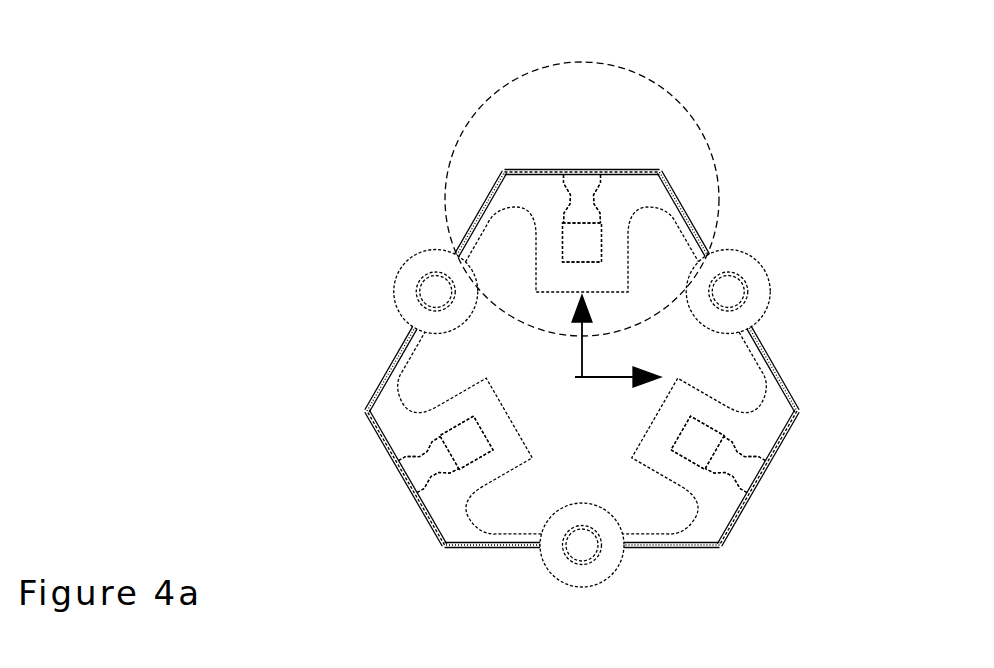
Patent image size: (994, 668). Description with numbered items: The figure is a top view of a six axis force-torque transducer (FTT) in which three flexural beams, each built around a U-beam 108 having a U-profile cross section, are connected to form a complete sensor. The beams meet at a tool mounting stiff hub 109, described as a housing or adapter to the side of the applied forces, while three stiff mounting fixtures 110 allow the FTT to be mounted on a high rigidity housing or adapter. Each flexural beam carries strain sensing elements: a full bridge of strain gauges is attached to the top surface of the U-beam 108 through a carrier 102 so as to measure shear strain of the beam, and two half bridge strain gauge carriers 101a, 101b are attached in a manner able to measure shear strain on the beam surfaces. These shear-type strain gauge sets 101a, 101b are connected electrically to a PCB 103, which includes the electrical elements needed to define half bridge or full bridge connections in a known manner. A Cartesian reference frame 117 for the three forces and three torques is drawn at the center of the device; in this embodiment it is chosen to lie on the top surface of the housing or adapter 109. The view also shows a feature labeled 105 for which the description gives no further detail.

The half bridge strain gauge carrier 101a is at (686, 223).
The half bridge strain gauge carrier 101b is at (475, 225).
The carrier 102 is at (593, 245).
The PCB 103 is at (550, 172).
The neck of slot 105 is at (578, 192).
The U-beam 108 is at (609, 257).
The tool mounting stiff hub 109 is at (547, 360).
The stiff mounting fixture 110 is at (410, 288).
The reference frame 117 is at (580, 377).